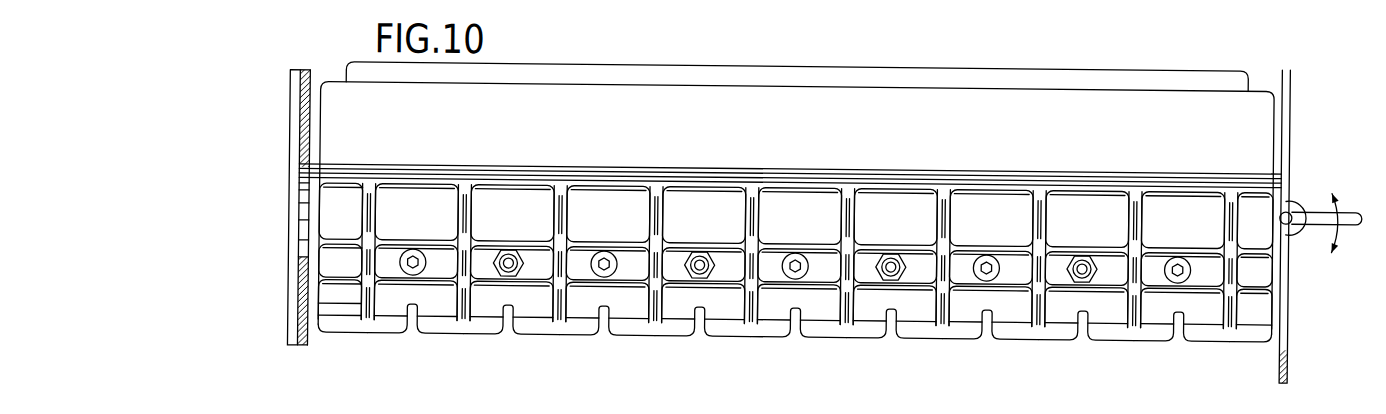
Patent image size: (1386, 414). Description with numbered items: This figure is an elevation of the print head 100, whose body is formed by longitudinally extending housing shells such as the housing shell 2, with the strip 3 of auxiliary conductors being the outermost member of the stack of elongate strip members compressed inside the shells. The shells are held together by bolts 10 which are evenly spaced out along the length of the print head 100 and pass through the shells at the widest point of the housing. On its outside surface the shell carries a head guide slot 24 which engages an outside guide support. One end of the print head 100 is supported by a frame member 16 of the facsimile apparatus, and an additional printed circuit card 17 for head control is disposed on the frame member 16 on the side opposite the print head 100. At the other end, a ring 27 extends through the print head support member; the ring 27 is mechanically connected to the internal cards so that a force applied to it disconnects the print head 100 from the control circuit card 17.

The print head 100 is at (796, 178).
The housing shell 2 is at (621, 214).
The strip of auxiliary conductors 3 is at (833, 57).
The bolts 10 is at (424, 271).
The frame member 16 is at (1290, 357).
The printed circuit card 17 is at (292, 177).
The head guide slot 24 is at (703, 176).
The ring 27 is at (1318, 208).